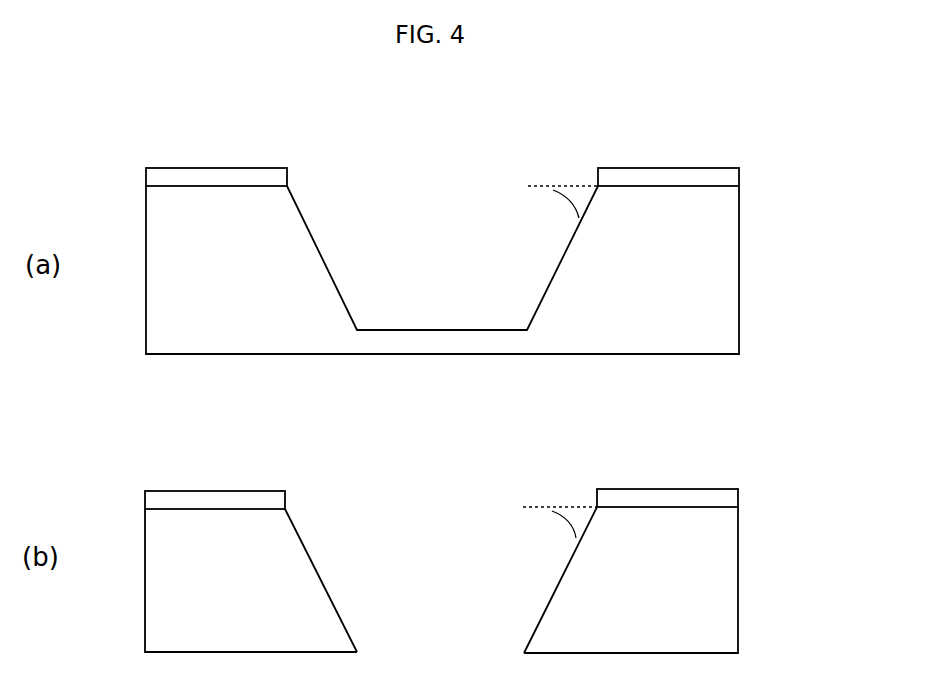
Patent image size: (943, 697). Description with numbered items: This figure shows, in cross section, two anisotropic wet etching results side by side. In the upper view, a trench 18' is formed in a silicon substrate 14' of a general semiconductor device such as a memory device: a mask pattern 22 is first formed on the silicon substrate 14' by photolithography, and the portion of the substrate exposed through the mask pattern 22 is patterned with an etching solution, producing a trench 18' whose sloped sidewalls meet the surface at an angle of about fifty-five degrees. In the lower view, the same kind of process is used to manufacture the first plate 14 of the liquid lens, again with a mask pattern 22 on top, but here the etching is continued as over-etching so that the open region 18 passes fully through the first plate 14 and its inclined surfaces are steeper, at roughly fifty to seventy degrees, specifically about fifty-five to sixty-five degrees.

The first plate 14 is at (495, 580).
The silicon substrate 14' is at (497, 270).
The open region 18 is at (441, 548).
The trench 18' is at (442, 225).
The mask pattern 22 is at (217, 162).